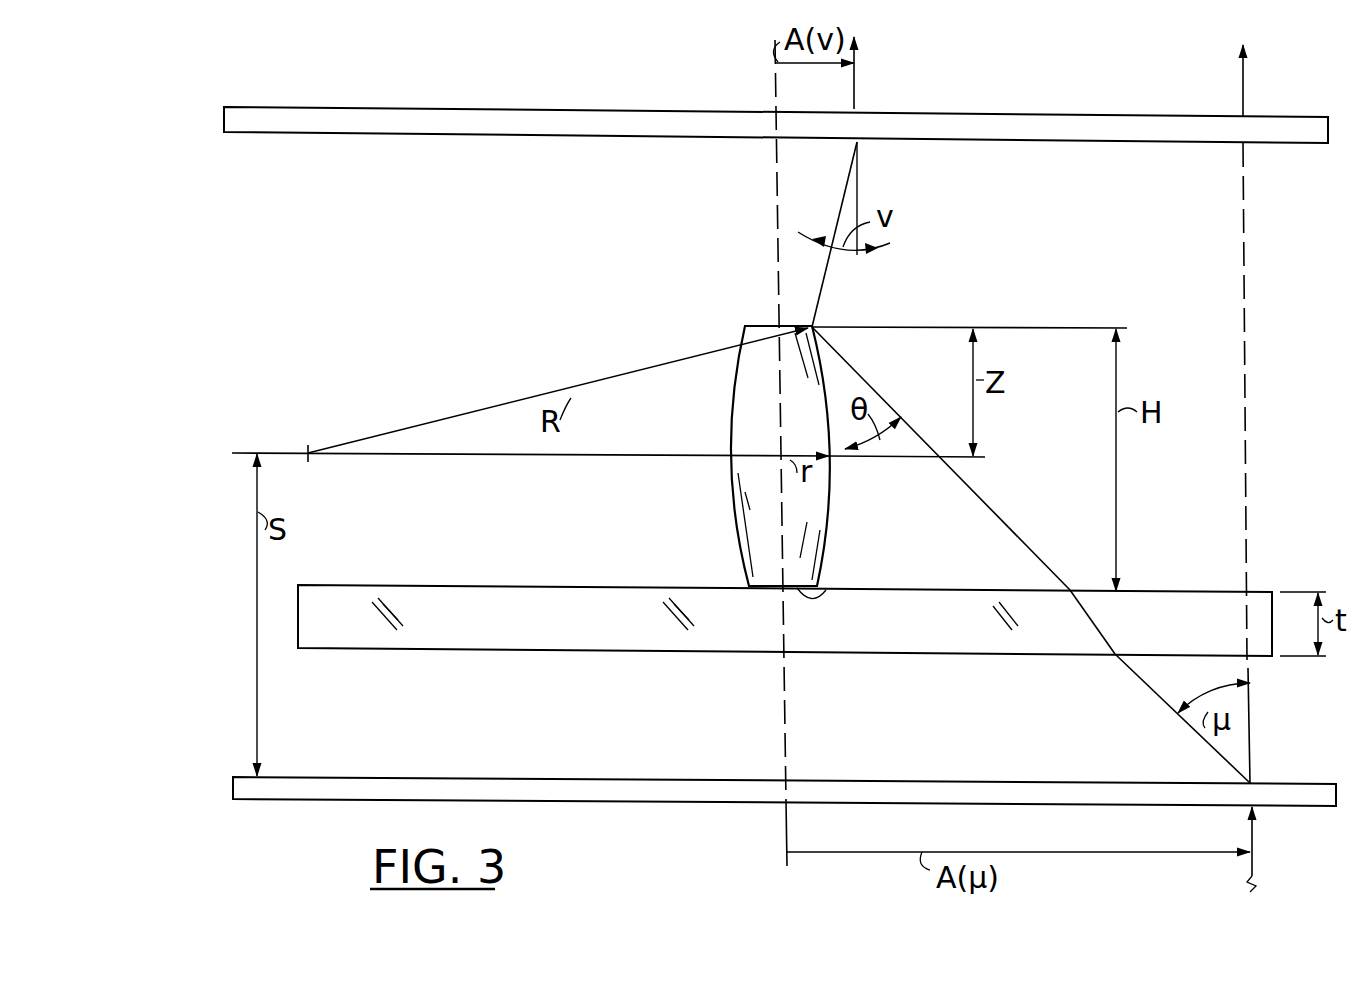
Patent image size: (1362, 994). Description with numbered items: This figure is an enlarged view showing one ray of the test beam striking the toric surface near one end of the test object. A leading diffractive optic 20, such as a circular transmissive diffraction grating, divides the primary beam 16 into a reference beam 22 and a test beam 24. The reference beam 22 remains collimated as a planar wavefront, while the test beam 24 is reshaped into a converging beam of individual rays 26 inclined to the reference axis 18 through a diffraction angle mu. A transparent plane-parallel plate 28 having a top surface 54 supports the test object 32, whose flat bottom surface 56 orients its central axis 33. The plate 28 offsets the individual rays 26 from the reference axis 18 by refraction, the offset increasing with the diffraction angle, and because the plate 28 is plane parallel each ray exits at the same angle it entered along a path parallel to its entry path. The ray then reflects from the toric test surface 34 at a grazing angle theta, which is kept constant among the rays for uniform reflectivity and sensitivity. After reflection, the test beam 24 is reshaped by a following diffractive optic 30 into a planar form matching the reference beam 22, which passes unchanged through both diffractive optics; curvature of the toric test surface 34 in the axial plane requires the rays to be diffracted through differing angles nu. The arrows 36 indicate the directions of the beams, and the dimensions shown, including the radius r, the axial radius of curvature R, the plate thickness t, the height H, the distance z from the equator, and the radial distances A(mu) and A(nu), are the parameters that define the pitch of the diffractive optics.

The primary beam 16 is at (1258, 835).
The reference axis 18 is at (786, 695).
The leading diffractive optic 20 is at (515, 776).
The reference beam 22 is at (1250, 470).
The test beam 24 is at (1030, 552).
The individual rays 26 is at (1153, 698).
The transparent plane-parallel plate 28 is at (578, 585).
The following diffractive optic 30 is at (450, 114).
The test object 32 is at (745, 497).
The central axis 33 is at (778, 375).
The toric test surface 34 is at (748, 540).
The direction arrows 36 is at (856, 82).
The top surface 54 is at (450, 585).
The flat bottom surface 56 is at (823, 595).